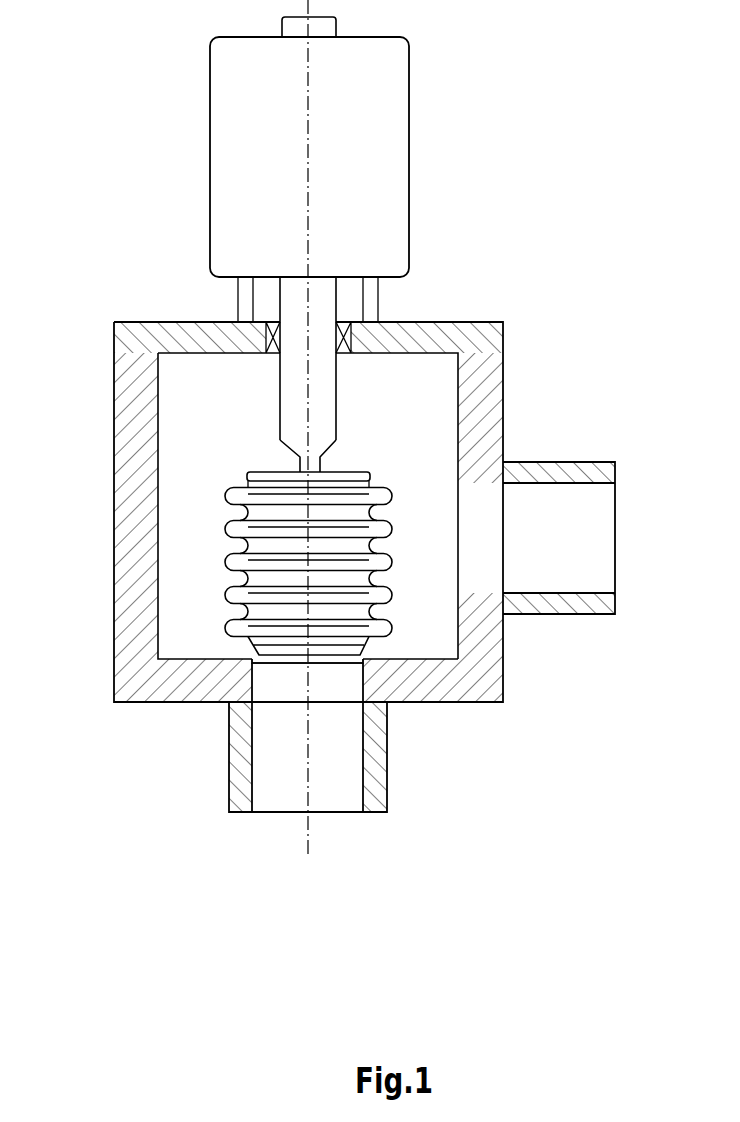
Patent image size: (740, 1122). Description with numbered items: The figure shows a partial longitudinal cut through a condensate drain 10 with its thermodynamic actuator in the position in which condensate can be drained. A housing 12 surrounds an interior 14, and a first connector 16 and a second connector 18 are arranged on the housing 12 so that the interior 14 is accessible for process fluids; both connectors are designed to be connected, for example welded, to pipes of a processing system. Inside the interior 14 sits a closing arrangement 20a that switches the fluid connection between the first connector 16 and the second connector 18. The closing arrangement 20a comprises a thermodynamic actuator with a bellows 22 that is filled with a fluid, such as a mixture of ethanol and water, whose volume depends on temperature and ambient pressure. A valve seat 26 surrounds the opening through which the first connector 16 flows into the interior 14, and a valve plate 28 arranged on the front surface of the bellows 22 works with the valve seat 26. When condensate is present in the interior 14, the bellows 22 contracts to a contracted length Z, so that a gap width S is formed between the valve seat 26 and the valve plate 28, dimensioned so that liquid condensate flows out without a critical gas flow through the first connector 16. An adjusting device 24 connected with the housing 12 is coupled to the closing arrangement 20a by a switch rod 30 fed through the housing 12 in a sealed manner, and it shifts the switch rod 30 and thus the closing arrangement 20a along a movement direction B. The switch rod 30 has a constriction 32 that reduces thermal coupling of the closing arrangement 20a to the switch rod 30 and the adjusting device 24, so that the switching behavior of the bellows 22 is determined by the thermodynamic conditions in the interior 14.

The condensate drain 10 is at (538, 294).
The housing 12 is at (490, 405).
The interior 14 is at (220, 418).
The first connector 16 is at (243, 743).
The second connector 18 is at (562, 466).
The closing arrangement 20a is at (216, 523).
The bellows 22 is at (228, 573).
The adjusting device 24 is at (373, 125).
The valve seat 26 is at (250, 665).
The valve plate 28 is at (257, 650).
The switch rod 30 is at (288, 297).
The constriction 32 is at (300, 462).
The movement direction B is at (361, 424).
The contracted length Z is at (406, 643).
The gap width S is at (252, 665).